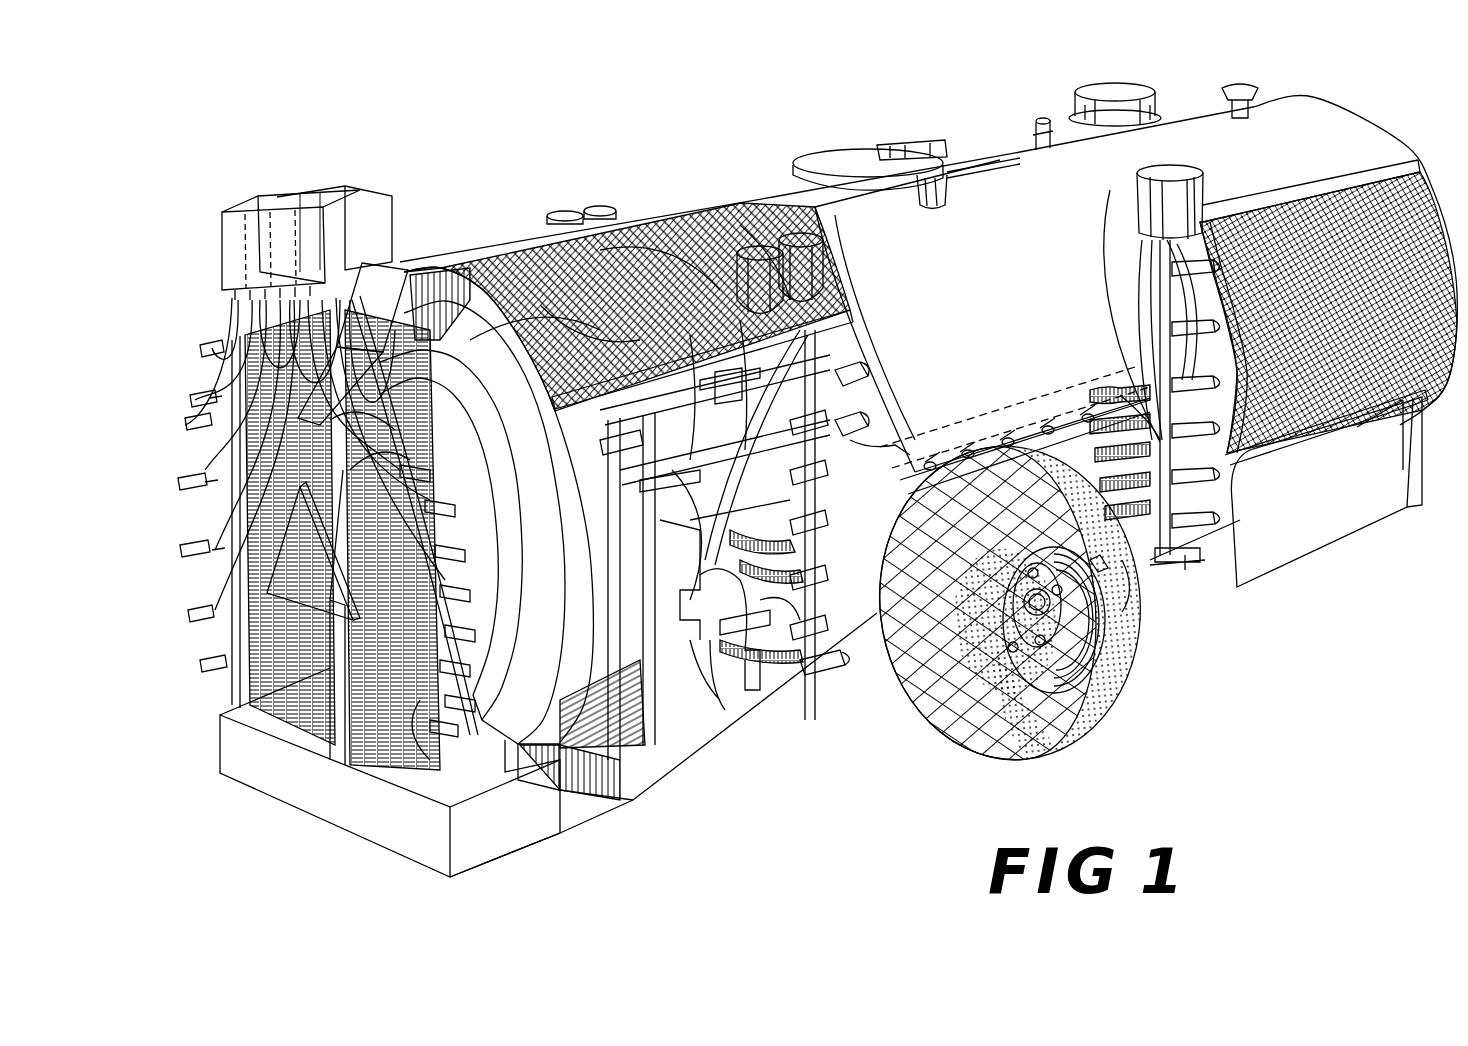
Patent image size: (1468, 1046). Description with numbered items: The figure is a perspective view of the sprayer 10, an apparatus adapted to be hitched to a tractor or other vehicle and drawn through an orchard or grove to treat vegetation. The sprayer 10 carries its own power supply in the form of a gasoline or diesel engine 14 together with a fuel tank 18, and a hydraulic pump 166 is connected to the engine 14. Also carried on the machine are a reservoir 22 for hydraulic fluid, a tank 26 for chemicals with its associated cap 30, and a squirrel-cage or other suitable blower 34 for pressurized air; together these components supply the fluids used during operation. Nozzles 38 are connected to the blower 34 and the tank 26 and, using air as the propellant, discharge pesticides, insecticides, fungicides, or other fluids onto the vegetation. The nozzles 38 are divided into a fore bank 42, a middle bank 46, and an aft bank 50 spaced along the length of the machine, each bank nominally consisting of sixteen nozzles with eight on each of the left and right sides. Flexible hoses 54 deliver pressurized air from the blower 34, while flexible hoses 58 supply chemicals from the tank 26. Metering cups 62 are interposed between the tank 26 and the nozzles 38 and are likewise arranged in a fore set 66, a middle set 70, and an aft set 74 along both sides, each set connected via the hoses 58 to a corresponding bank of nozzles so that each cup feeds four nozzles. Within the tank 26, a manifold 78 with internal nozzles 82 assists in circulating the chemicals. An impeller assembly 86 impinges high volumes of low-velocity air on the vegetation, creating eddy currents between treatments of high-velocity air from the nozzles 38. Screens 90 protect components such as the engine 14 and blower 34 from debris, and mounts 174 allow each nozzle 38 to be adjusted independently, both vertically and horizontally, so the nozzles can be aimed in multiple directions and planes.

The sprayer 10 is at (436, 140).
The engine 14 is at (1330, 125).
The fuel tank 18 is at (1335, 510).
The reservoir 22 is at (1120, 185).
The tank 26 is at (1024, 293).
The cap 30 is at (828, 160).
The blower 34 is at (672, 212).
The nozzles 38 is at (212, 348).
The fore bank 42 is at (1195, 558).
The middle bank 46 is at (826, 712).
The aft bank 50 is at (385, 793).
The flexible hoses 54 is at (200, 481).
The flexible hoses 58 is at (193, 400).
The metering cups 62 is at (1165, 183).
The fore set 66 is at (906, 137).
The middle set 70 is at (566, 212).
The aft set 74 is at (258, 195).
The manifold 78 is at (1035, 392).
The internal nozzles 82 is at (978, 422).
The impeller assembly 86 is at (540, 738).
The screens 90 is at (1395, 215).
The hydraulic pump 166 is at (290, 826).
The mounts 174 is at (912, 462).